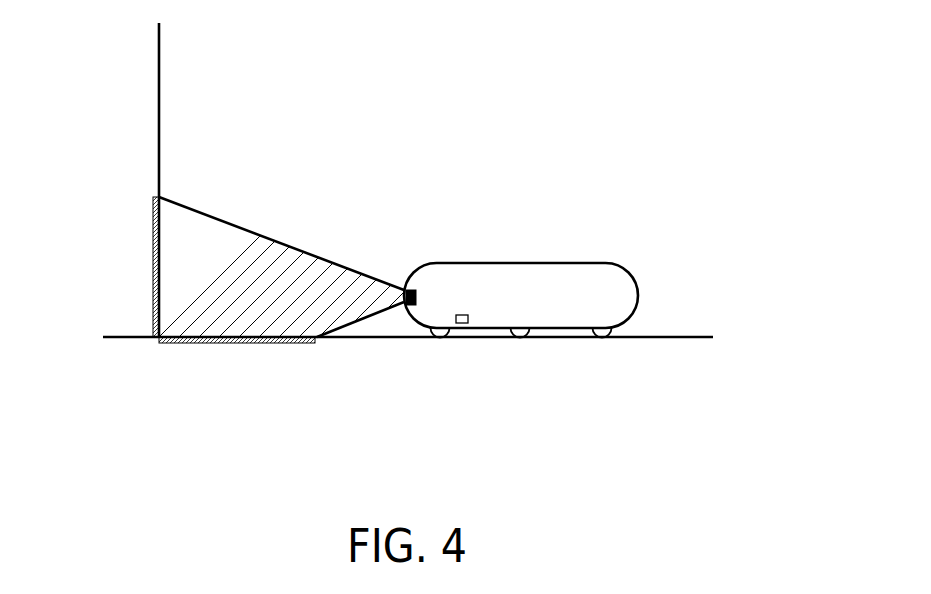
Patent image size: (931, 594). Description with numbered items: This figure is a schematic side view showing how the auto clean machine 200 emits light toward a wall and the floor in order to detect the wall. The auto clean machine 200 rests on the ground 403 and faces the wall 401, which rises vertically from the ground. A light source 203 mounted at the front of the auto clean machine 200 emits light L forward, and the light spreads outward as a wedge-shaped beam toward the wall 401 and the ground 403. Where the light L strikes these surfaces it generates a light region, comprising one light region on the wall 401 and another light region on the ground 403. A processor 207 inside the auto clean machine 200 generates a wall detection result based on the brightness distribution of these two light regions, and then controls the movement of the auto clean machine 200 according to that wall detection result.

The wall 401 is at (110, 135).
The ground 403 is at (510, 393).
The light L is at (293, 273).
The auto clean machine 200 is at (638, 295).
The light source 203 is at (407, 289).
The processor 207 is at (466, 314).